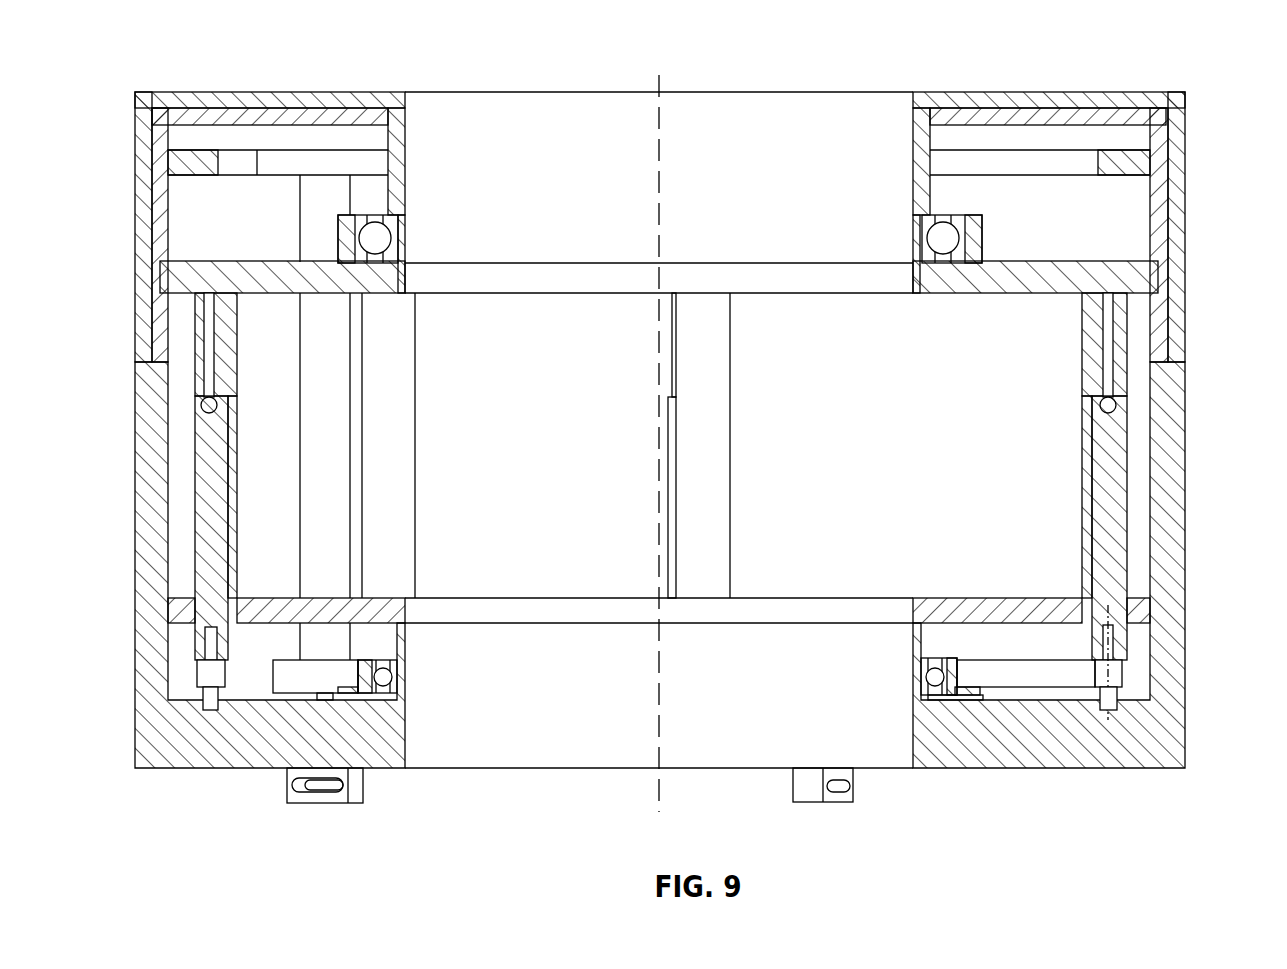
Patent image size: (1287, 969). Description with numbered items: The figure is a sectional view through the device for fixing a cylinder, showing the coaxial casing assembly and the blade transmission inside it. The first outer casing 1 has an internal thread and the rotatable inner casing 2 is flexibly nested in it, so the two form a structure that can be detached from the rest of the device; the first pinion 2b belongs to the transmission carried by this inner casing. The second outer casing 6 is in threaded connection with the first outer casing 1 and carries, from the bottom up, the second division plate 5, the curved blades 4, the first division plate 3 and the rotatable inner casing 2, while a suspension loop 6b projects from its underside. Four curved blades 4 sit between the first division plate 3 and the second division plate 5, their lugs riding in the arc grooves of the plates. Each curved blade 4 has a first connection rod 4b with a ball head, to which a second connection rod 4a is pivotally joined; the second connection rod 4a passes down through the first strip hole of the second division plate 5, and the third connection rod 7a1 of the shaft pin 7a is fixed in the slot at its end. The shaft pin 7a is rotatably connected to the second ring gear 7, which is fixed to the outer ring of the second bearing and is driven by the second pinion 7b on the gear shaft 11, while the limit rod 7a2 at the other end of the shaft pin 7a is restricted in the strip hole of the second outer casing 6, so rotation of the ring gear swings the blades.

The first outer casing 1 is at (145, 173).
The rotatable inner casing 2 is at (245, 117).
The first pinion 2b is at (337, 163).
The first division plate 3 is at (216, 284).
The curved blade 4 is at (1092, 358).
The second connection rod 4a is at (215, 508).
The first connection rod 4b is at (1116, 406).
The second division plate 5 is at (1057, 612).
The second outer casing 6 is at (1163, 480).
The suspension loop 6b is at (310, 797).
The second ring gear 7 is at (970, 692).
The shaft pin 7a is at (1057, 675).
The third connection rod 7a1 is at (1113, 640).
The limit rod 7a2 is at (1112, 702).
The second pinion 7b is at (302, 683).
The gear shaft 11 is at (313, 577).